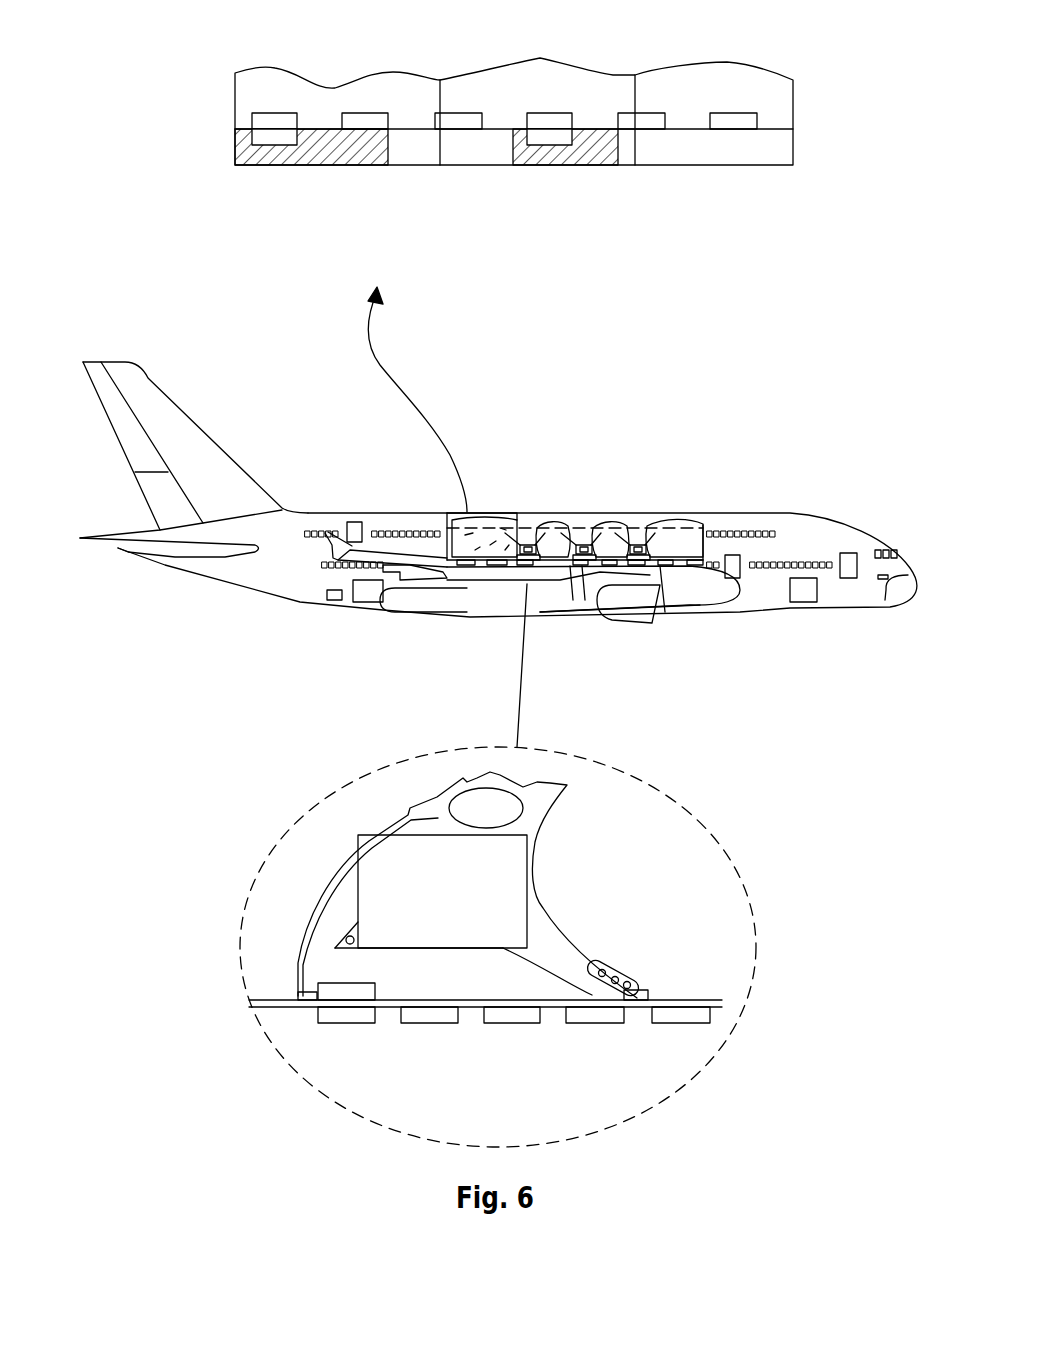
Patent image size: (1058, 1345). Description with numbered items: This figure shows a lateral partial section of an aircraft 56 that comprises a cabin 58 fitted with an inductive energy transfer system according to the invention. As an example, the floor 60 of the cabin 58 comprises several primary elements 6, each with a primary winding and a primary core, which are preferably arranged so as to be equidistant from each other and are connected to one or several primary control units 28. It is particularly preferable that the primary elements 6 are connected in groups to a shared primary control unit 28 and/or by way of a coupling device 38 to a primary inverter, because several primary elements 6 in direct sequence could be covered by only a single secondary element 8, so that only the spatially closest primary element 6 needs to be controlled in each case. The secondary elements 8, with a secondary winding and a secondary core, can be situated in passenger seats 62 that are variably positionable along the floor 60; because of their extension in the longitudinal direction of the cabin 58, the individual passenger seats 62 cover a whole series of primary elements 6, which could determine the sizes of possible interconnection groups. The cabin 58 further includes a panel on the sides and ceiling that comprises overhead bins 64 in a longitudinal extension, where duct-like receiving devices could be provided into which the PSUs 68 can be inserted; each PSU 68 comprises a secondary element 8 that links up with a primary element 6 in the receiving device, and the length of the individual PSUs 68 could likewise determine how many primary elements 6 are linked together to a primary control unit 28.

The primary element 6 is at (278, 120).
The secondary element 8 is at (267, 147).
The primary control unit 28 is at (652, 600).
The coupling device 38 is at (606, 600).
The aircraft 56 is at (555, 390).
The cabin 58 is at (447, 513).
The floor 60 is at (412, 153).
The passenger seat 62 is at (527, 543).
The overhead bin 64 is at (610, 93).
The PSU 68 is at (322, 157).